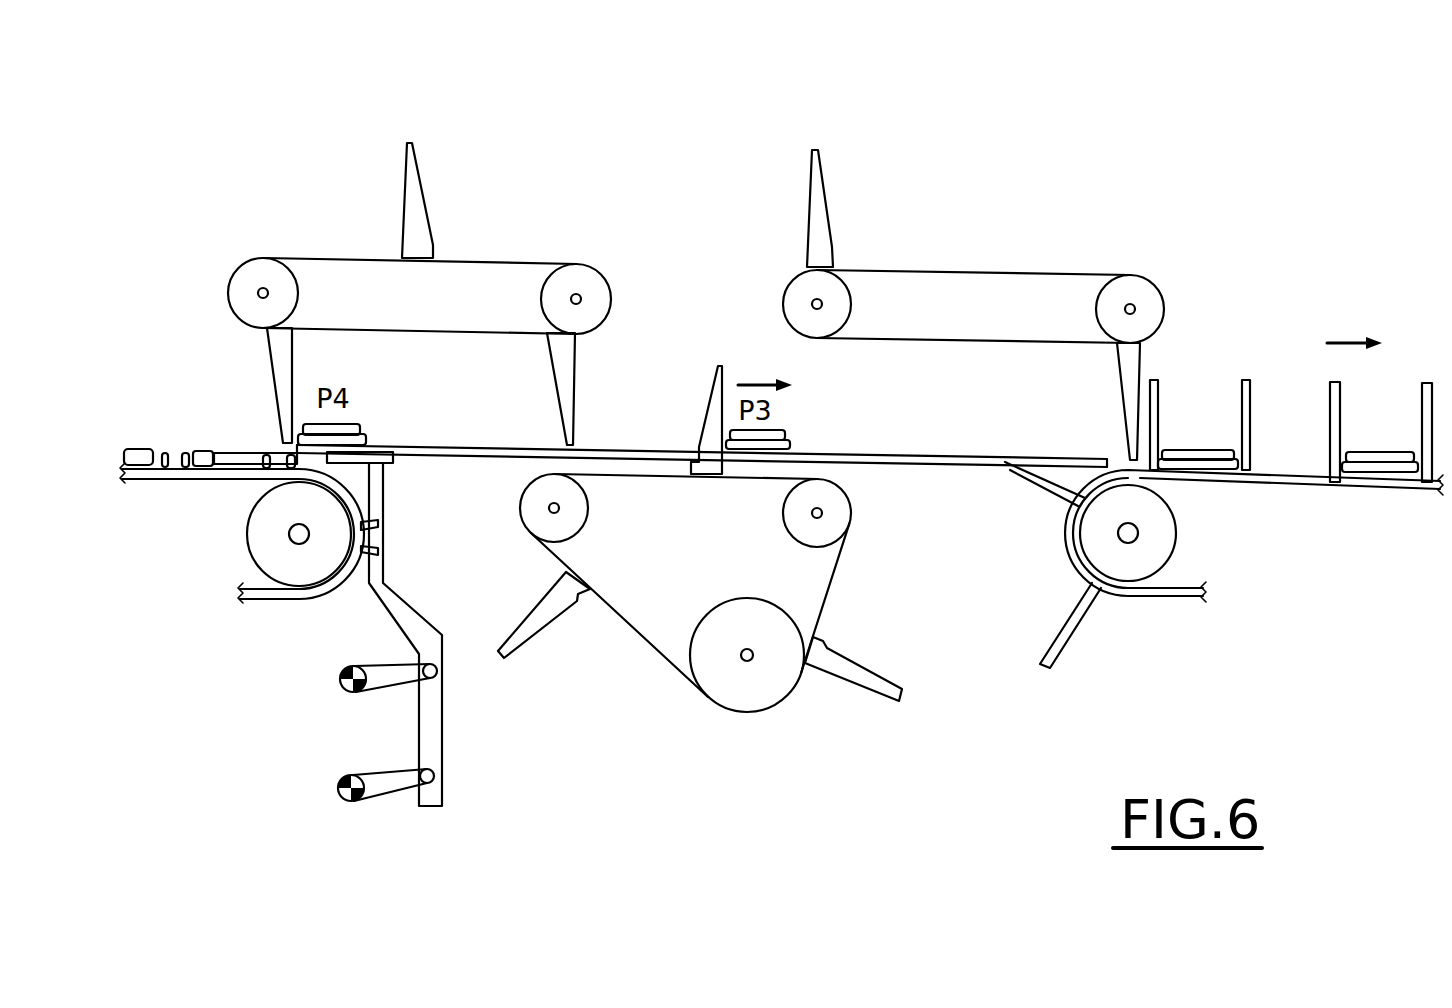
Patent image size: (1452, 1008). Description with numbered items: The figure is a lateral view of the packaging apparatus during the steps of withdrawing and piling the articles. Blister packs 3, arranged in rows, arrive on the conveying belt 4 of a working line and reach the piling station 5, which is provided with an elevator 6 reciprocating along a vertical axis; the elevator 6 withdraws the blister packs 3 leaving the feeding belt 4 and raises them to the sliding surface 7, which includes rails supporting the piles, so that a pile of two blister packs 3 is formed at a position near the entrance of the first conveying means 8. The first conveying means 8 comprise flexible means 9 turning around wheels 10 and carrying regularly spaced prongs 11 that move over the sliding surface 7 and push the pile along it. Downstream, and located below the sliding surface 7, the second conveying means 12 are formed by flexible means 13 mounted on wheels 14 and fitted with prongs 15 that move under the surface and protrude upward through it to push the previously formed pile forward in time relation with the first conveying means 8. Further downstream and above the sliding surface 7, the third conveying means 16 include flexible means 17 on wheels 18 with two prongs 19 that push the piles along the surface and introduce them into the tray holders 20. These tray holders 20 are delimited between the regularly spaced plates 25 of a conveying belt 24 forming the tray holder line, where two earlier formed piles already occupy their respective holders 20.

The blister packs 3 is at (142, 447).
The conveying belt 4 is at (187, 421).
The piling station 5 is at (401, 499).
The elevator 6 is at (398, 605).
The sliding surface 7 is at (893, 457).
The first conveying means 8 is at (397, 269).
The flexible means 9 is at (320, 254).
The wheels 10 is at (251, 276).
The prongs 11 is at (408, 188).
The second conveying means 12 is at (717, 539).
The flexible means 13 is at (829, 581).
The wheels 14 is at (832, 494).
The prongs 15 is at (714, 385).
The third conveying means 16 is at (973, 290).
The flexible means 17 is at (1055, 270).
The wheels 18 is at (827, 290).
The prongs 19 is at (815, 185).
The tray holders 20 is at (1241, 463).
The conveying belt 24 is at (1170, 593).
The plates 25 is at (1250, 390).